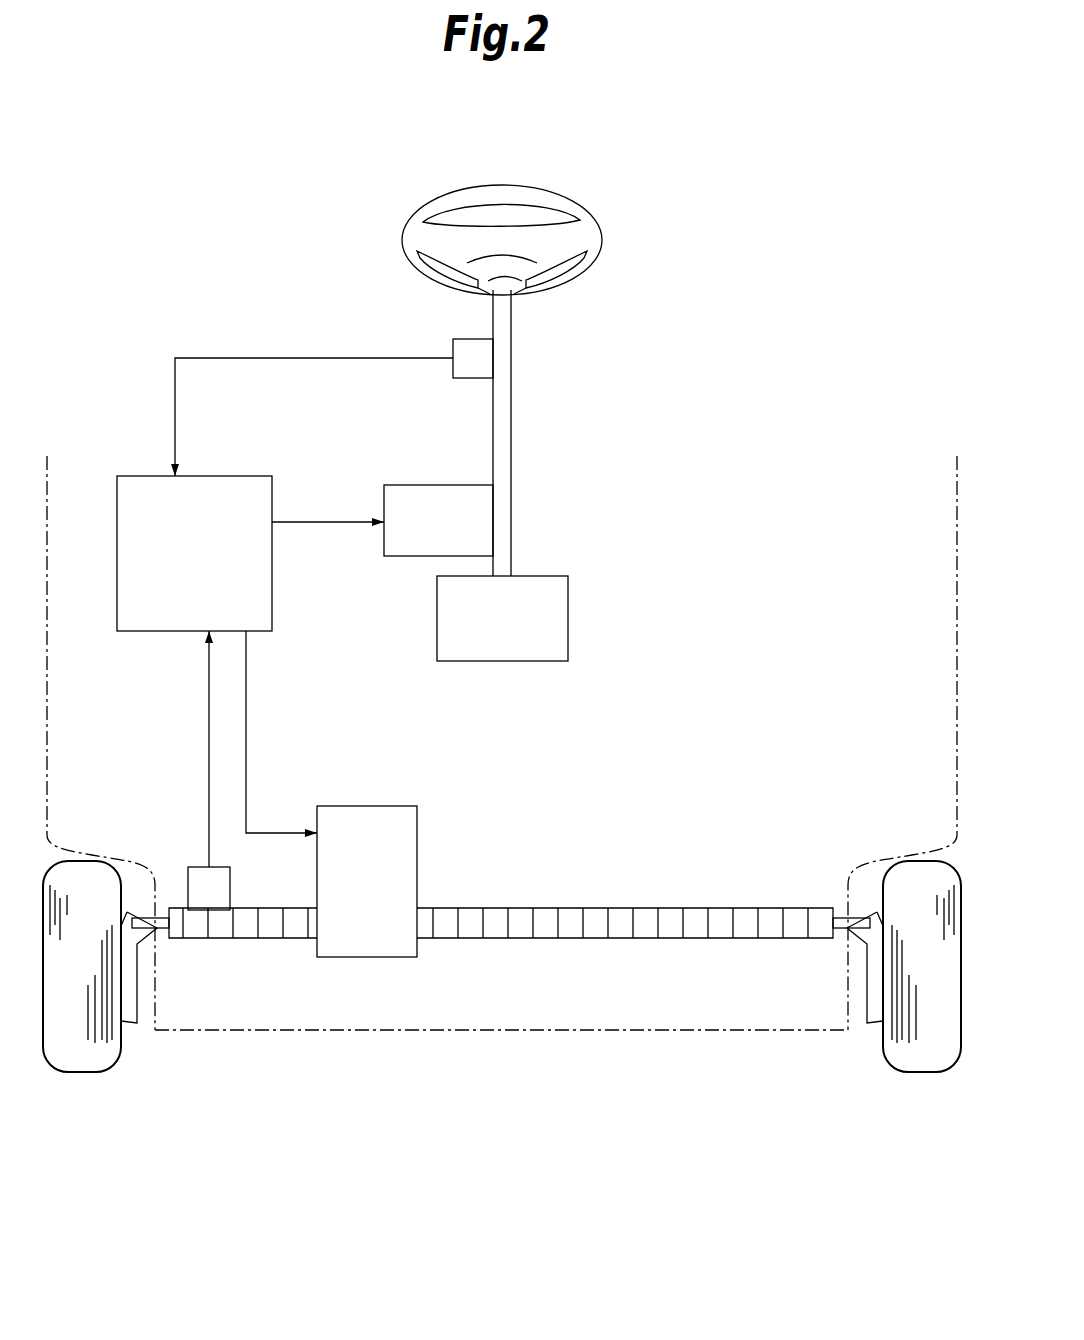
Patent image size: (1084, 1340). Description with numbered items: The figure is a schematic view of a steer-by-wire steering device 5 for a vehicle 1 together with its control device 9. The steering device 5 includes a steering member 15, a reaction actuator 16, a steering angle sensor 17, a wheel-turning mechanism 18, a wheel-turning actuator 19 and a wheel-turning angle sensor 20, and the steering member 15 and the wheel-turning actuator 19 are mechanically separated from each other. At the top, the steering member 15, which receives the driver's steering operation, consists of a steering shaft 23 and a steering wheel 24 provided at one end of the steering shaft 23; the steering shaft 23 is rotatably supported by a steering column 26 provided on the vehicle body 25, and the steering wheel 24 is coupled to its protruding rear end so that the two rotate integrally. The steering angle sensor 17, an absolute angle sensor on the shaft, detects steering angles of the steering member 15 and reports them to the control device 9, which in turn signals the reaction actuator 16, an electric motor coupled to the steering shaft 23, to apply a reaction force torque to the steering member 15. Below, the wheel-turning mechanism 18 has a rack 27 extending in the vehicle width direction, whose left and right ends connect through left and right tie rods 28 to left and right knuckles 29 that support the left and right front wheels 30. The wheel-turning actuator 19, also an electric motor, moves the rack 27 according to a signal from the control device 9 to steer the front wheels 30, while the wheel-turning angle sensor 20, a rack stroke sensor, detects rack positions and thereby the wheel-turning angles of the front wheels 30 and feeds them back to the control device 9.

The vehicle 1 is at (223, 1063).
The steering device 5 is at (492, 356).
The control device 9 is at (160, 631).
The steering member 15 is at (474, 237).
The reaction actuator 16 is at (440, 485).
The steering angle sensor 17 is at (467, 339).
The wheel-turning mechanism 18 is at (501, 942).
The wheel-turning actuator 19 is at (345, 957).
The wheel-turning angle sensor 20 is at (201, 867).
The steering shaft 23 is at (500, 385).
The steering wheel 24 is at (577, 280).
The vehicle body 25 is at (728, 1032).
The steering column 26 is at (568, 601).
The rack 27 is at (647, 940).
The tie rods 28 is at (155, 930).
The knuckles 29 is at (128, 1022).
The front wheels 30 is at (73, 1065).